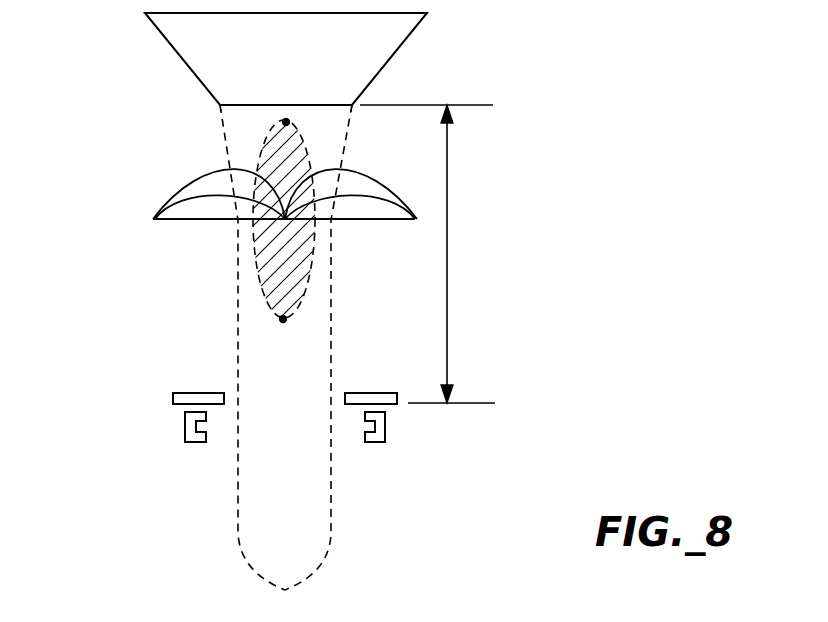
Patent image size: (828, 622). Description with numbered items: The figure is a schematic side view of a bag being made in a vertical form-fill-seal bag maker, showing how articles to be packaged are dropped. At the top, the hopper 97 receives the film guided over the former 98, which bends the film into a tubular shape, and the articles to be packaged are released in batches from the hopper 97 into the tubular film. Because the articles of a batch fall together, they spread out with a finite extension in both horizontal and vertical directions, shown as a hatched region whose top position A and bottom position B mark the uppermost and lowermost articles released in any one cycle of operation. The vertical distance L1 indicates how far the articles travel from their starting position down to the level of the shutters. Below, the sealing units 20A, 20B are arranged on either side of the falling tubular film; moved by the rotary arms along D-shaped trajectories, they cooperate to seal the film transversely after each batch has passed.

The hopper 97 is at (385, 47).
The former 98 is at (200, 119).
The top position of batch A is at (287, 118).
The bottom position of batch B is at (288, 322).
The vertical distance L1 is at (427, 254).
The sealing unit 20A is at (412, 431).
The sealing unit 20B is at (160, 432).